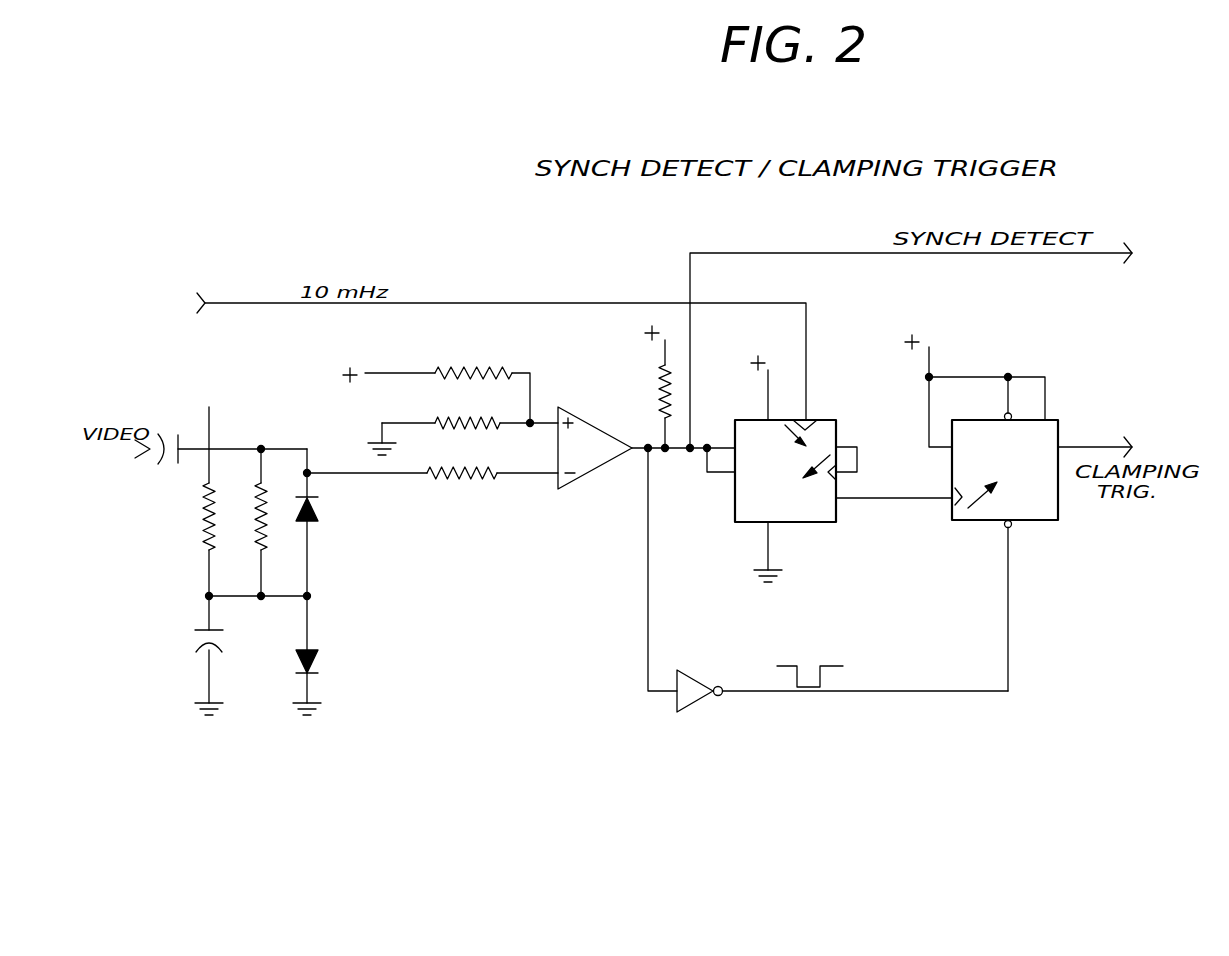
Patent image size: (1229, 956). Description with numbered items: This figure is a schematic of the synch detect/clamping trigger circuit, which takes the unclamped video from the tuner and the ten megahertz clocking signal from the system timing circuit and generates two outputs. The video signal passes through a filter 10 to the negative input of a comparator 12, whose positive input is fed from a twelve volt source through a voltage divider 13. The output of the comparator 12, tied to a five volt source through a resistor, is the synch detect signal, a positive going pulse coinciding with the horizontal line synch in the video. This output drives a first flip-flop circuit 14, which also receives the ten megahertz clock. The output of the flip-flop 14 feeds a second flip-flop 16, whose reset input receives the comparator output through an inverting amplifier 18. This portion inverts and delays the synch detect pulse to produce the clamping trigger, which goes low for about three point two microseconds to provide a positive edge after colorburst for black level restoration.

The filter 10 is at (316, 560).
The comparator 12 is at (573, 481).
The voltage divider 13 is at (539, 407).
The first flip-flop circuit 14 is at (802, 524).
The second flip-flop 16 is at (1043, 521).
The inverting amplifier 18 is at (730, 648).